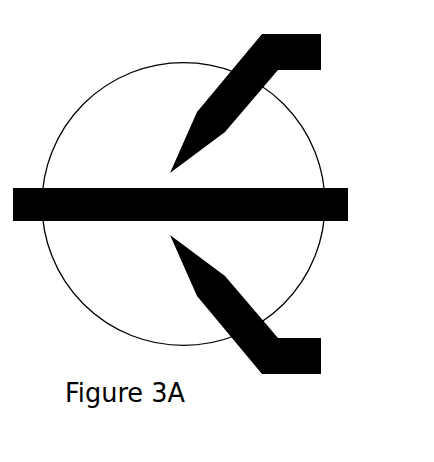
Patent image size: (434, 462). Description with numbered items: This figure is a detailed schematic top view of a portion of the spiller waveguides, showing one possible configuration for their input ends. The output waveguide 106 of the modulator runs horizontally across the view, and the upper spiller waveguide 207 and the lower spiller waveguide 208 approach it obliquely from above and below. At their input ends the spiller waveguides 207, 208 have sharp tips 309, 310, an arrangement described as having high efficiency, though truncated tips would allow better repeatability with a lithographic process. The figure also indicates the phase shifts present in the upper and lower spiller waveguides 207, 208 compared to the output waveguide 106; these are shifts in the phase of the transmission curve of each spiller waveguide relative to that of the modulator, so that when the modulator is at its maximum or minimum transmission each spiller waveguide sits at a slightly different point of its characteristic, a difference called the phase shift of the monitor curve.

The output waveguide 106 is at (337, 188).
The upper spiller waveguide 207 is at (304, 70).
The lower spiller waveguide 208 is at (296, 338).
The sharp tip 309 is at (185, 148).
The sharp tip 310 is at (172, 238).